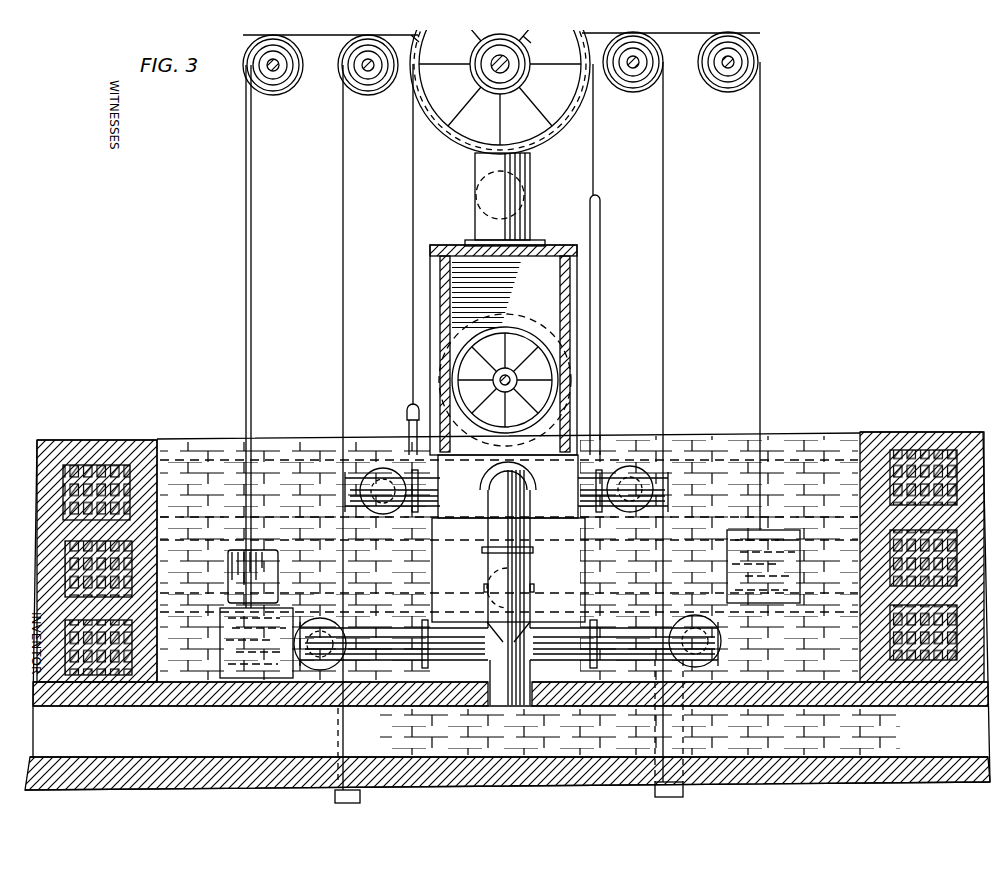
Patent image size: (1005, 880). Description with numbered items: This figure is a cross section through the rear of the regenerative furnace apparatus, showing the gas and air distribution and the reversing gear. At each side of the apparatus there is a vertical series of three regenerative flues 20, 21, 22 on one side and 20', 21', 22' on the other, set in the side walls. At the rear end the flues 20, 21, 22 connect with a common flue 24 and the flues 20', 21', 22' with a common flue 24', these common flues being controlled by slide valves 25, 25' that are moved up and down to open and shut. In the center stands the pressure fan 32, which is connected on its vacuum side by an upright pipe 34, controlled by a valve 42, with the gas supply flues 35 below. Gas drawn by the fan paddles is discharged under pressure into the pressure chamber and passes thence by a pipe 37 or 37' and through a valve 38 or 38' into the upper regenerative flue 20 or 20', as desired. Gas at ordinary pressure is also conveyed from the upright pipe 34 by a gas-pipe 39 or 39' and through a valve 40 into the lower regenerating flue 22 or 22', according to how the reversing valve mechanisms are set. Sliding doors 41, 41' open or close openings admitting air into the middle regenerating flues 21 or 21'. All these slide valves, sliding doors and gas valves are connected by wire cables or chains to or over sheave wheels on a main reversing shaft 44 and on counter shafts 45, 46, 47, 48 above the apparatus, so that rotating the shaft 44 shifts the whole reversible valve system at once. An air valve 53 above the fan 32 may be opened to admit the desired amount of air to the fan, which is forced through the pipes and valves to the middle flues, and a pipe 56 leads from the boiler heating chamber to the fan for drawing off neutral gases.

The regenerative flue 20 is at (923, 453).
The regenerative flue 20' is at (66, 492).
The regenerative flue 21 is at (894, 558).
The regenerative flue 21' is at (67, 569).
The regenerative flue 22 is at (894, 632).
The regenerative flue 22' is at (68, 643).
The common flue 24 is at (719, 546).
The common flue 24' is at (295, 549).
The slide valve 25 is at (610, 325).
The slide valve 25' is at (398, 429).
The pressure fan 32 is at (522, 333).
The upright pipe 34 is at (530, 556).
The gas supply flue 35 is at (640, 732).
The pipe 37 is at (623, 498).
The pipe 37' is at (392, 497).
The valve 38 is at (631, 478).
The valve 38' is at (378, 482).
The gas-pipe 39 is at (624, 647).
The gas-pipe 39' is at (394, 648).
The valve 40 is at (318, 624).
The sliding door 41 is at (766, 556).
The sliding door 41' is at (244, 614).
The valve 42 is at (532, 588).
The main reversing shaft 44 is at (492, 72).
The counter shaft 45 is at (273, 72).
The counter shaft 46 is at (368, 72).
The counter shaft 47 is at (633, 69).
The counter shaft 48 is at (728, 69).
The air valve 53 is at (530, 156).
The pipe 56 is at (526, 203).